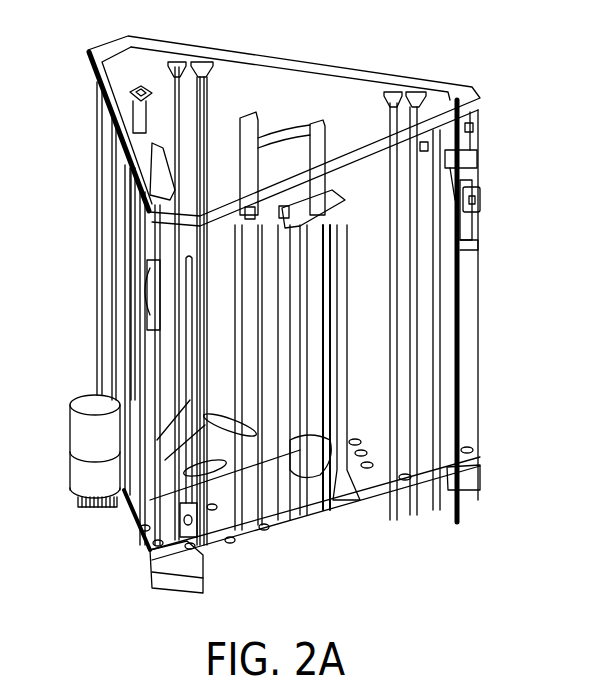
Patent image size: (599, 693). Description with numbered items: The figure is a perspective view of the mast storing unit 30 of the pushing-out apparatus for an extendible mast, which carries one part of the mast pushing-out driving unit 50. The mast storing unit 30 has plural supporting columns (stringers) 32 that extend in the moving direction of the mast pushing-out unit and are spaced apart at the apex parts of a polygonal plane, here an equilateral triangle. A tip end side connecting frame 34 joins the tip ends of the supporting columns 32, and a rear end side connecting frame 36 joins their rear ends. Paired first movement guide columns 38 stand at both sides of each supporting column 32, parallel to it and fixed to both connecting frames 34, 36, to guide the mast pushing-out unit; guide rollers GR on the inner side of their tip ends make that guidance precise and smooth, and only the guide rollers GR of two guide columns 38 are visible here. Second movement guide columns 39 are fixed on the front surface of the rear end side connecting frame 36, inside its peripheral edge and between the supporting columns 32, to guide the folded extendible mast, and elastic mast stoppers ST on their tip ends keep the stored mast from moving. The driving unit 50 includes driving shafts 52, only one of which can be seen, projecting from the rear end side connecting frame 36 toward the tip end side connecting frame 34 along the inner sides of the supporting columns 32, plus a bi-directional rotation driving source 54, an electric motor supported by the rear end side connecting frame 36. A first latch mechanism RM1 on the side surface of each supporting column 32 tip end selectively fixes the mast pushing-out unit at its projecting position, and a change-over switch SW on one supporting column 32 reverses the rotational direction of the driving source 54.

The mast storing unit 30 is at (82, 105).
The supporting column (stringer) 32 is at (119, 62).
The tip end side connecting frame 34 is at (362, 72).
The rear end side connecting frame 36 is at (380, 480).
The first movement guide column 38 is at (97, 185).
The second movement guide column 39 is at (317, 121).
The mast pushing-out driving unit 50 is at (92, 517).
The driving shaft 52 is at (187, 440).
The bi-directional rotation driving source 54 is at (72, 432).
The guide roller GR is at (200, 62).
The first latch mechanism RM1 is at (142, 85).
The mast stopper ST is at (282, 133).
The change-over switch SW is at (481, 198).